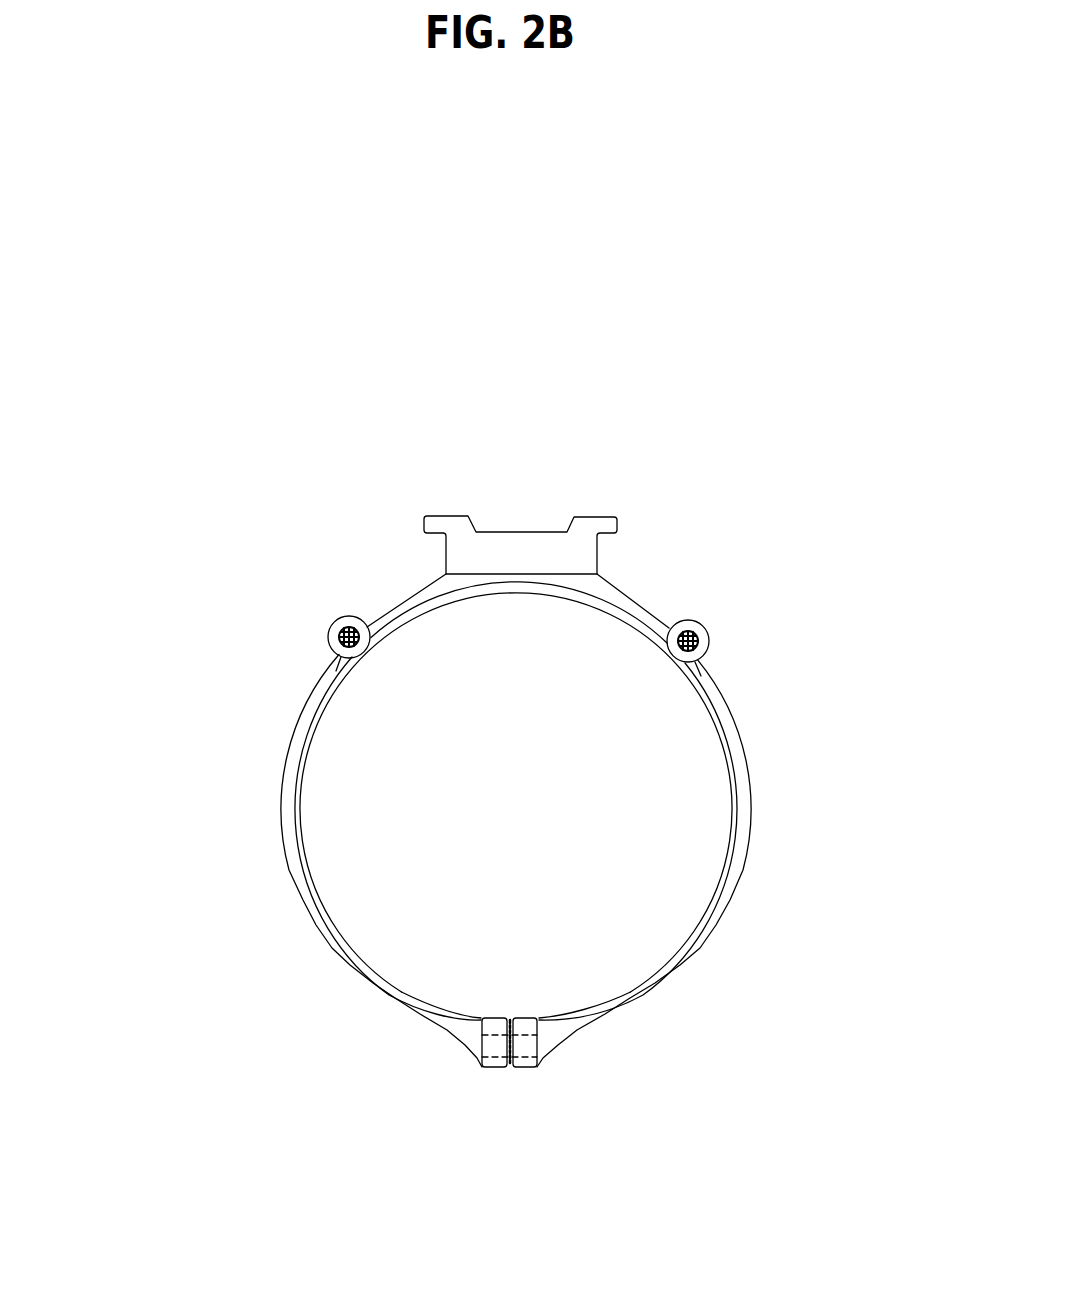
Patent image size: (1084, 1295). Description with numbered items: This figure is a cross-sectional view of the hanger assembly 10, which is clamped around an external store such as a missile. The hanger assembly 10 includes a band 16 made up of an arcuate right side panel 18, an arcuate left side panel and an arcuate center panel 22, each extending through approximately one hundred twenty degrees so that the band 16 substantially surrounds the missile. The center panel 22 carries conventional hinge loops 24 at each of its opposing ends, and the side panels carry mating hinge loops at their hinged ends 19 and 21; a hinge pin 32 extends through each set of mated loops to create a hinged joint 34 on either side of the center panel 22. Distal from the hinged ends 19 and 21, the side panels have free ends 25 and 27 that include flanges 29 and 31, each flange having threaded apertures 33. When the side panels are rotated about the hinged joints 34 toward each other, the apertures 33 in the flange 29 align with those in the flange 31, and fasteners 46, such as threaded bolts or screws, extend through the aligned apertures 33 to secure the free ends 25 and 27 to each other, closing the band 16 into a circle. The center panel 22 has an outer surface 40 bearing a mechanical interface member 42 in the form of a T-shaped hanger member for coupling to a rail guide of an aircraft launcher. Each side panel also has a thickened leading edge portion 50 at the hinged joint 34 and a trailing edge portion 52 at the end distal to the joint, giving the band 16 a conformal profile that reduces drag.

The hanger assembly 10 is at (792, 292).
The band 16 is at (276, 867).
The right side panel 18 is at (732, 706).
The hinged end of right side panel 19 is at (718, 657).
The hinged end of left side panel 21 is at (330, 659).
The center panel 22 is at (654, 630).
The hinge loops 24 is at (366, 627).
The free end of right side panel 25 is at (548, 1031).
The free end of left side panel 27 is at (458, 1031).
The flange of right side panel 29 is at (508, 1068).
The flange of left side panel 31 is at (516, 1068).
The threaded apertures 33 is at (538, 1068).
The hinge pin 32 is at (349, 627).
The hinged joint 34 is at (318, 632).
The outer surface 40 is at (398, 605).
The mechanical interface member 42 is at (560, 555).
The fasteners 46 is at (476, 1061).
The leading edge portion 50 is at (332, 624).
The trailing edge portion 52 is at (478, 1064).